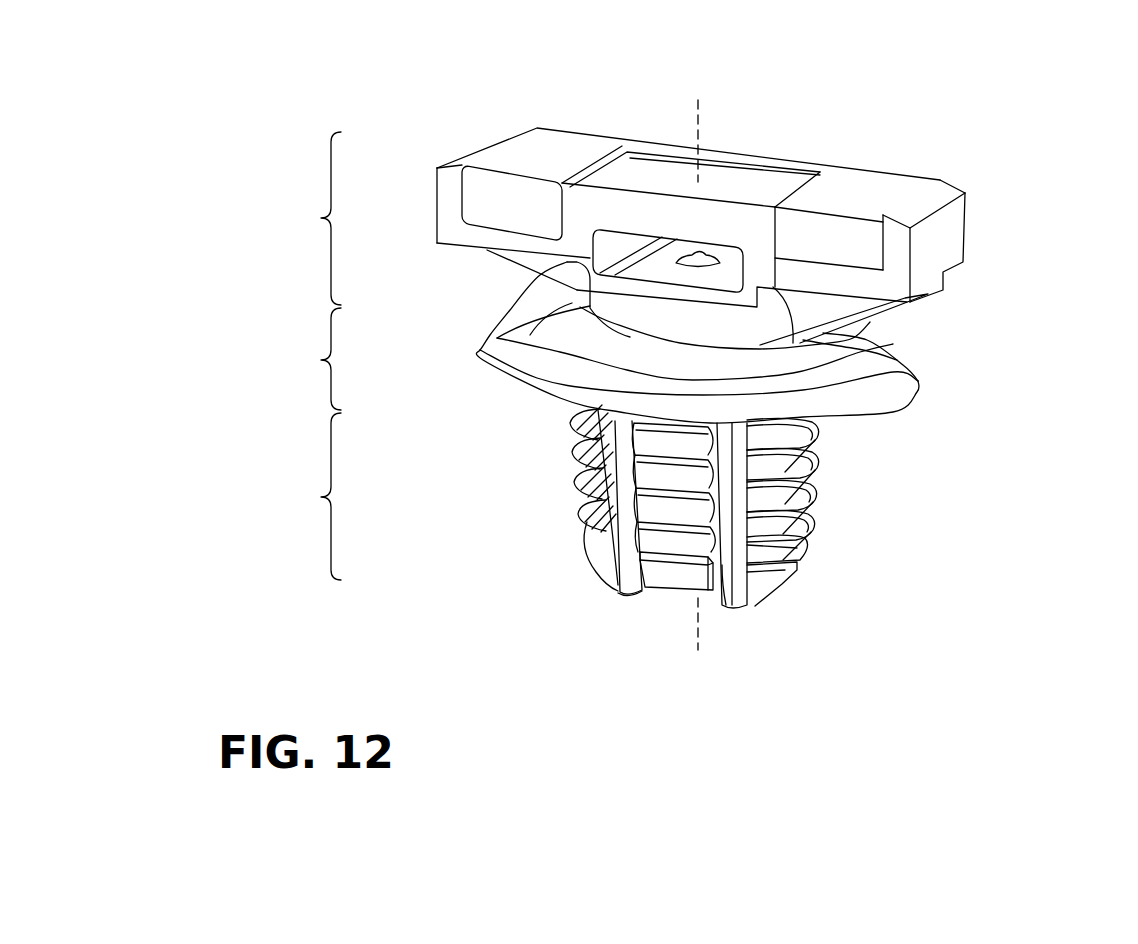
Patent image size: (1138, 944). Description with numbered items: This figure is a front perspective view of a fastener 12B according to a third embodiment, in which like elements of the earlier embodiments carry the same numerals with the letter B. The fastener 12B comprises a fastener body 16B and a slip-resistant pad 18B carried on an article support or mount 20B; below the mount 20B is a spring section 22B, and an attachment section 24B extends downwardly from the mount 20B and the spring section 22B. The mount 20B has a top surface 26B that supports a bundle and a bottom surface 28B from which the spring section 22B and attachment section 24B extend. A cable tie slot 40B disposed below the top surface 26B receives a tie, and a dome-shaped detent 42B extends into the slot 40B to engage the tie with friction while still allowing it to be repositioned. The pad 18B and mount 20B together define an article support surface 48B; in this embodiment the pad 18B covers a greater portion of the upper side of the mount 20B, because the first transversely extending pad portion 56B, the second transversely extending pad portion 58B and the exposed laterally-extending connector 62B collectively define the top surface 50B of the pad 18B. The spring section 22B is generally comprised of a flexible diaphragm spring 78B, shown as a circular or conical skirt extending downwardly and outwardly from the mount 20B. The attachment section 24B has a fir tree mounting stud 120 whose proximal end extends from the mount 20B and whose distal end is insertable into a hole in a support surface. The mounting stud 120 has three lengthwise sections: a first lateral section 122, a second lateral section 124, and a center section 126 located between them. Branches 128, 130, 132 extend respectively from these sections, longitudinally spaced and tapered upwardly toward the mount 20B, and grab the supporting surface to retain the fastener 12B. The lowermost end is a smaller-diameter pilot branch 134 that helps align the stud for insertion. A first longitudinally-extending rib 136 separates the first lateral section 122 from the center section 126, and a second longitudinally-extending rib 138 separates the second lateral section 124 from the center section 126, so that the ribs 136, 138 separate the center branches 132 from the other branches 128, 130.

The fastener 12B is at (990, 102).
The fastener body 16B is at (942, 252).
The slip-resistant pad 18B is at (907, 172).
The article support or mount 20B is at (302, 218).
The spring section 22B is at (302, 359).
The attachment section 24B is at (302, 496).
The top surface 26B is at (955, 185).
The bottom surface 28B is at (880, 305).
The slot 40B is at (640, 270).
The detent 42B is at (703, 253).
The article support surface 48B is at (602, 126).
The top surface of the pad 50B is at (847, 180).
The first transversely extending slip-resistant pad portion 56B is at (500, 140).
The second transversely extending slip-resistant pad portion 58B is at (937, 212).
The connector 62B is at (670, 147).
The diaphragm spring 78B is at (897, 382).
The mounting stud 120 is at (553, 483).
The first lateral section 122 is at (583, 515).
The second lateral section 124 is at (800, 555).
The center section 126 is at (675, 592).
The branches 128 is at (576, 477).
The branches 130 is at (818, 452).
The branches 132 is at (663, 468).
The pilot branch 134 is at (763, 607).
The first longitudinally-extending rib 136 is at (620, 588).
The second longitudinally-extending rib 138 is at (733, 607).